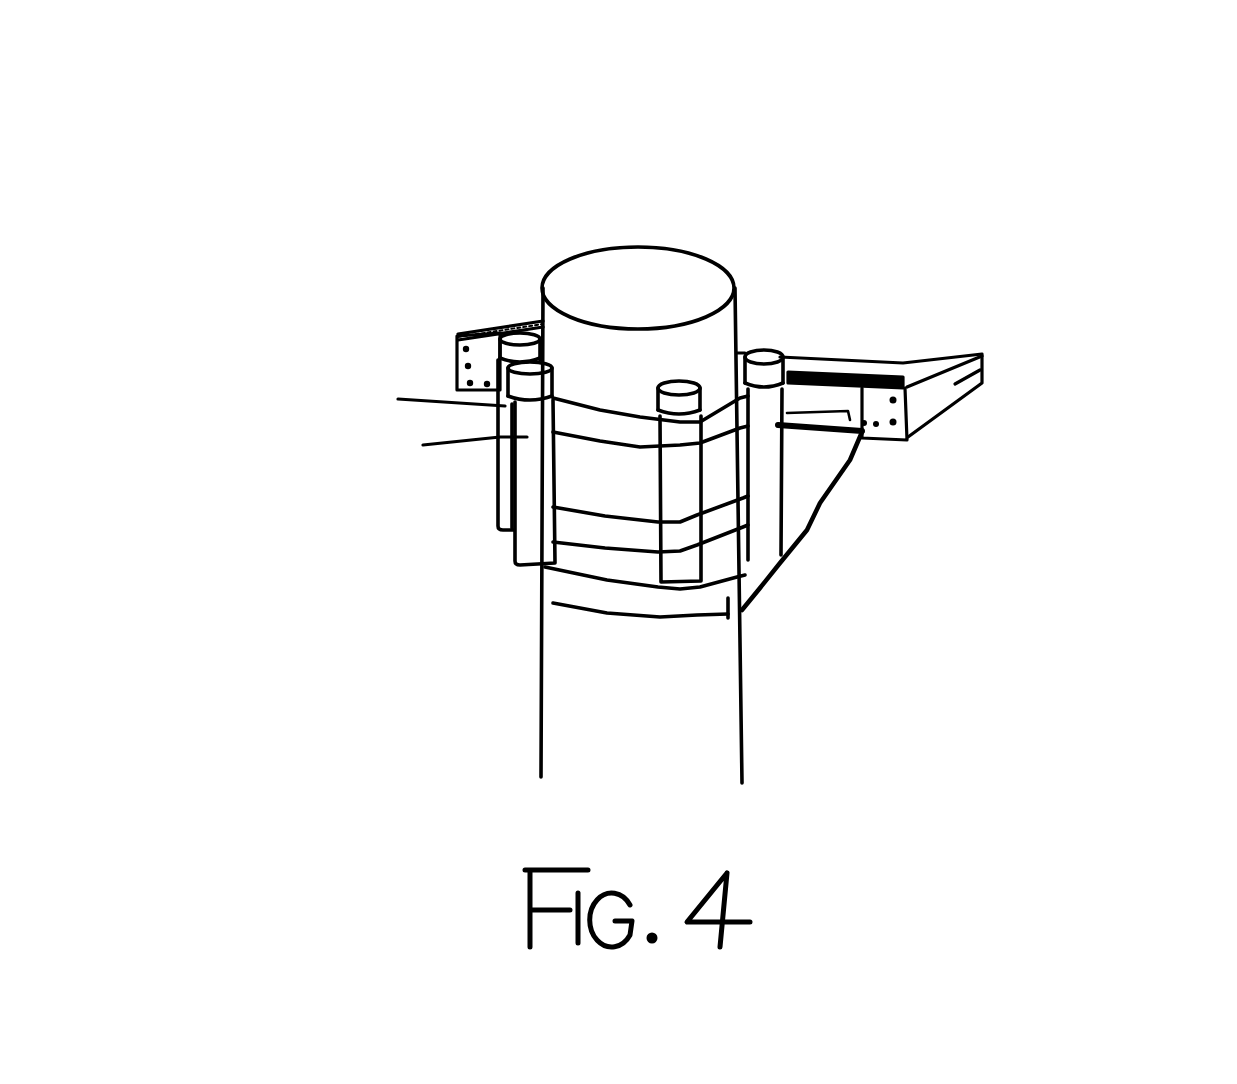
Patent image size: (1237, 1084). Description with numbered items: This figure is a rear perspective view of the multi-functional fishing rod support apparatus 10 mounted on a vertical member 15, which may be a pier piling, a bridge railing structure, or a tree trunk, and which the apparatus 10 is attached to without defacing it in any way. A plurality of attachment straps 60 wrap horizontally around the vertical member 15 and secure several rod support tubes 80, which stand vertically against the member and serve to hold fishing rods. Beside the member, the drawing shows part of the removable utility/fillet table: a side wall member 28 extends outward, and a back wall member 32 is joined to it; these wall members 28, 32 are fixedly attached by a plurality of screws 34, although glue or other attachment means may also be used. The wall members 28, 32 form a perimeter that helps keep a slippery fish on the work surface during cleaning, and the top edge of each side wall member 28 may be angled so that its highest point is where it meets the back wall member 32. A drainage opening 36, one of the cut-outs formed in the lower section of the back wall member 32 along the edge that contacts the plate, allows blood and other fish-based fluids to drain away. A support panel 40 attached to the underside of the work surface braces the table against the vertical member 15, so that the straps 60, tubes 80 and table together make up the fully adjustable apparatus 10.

The fishing rod support apparatus 10 is at (1018, 218).
The vertical member 15 is at (632, 287).
The side wall member 28 is at (983, 360).
The back wall member 32 is at (885, 414).
The screws 34 is at (460, 384).
The drainage openings 36 is at (822, 415).
The support panel 40 is at (813, 475).
The attachment straps 60 is at (598, 430).
The rod support tube 80 is at (530, 420).